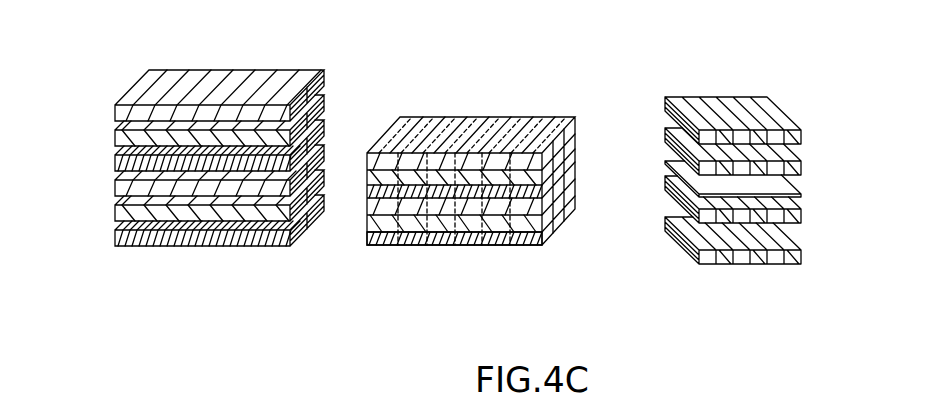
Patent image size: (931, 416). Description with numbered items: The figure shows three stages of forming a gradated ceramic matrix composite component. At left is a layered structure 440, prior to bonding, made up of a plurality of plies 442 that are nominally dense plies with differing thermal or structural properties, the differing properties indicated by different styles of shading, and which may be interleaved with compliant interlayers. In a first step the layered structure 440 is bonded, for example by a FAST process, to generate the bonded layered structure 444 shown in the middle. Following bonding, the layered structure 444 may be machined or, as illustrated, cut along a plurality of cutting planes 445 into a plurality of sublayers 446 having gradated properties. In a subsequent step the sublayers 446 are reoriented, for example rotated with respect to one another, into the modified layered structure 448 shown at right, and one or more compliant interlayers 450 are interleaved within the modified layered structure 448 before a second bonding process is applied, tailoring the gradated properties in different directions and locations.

The layered structure 440 is at (86, 110).
The plies 442 is at (96, 174).
The layered structure 444 is at (375, 98).
The cutting planes 445 is at (477, 135).
The sublayers 446 is at (441, 238).
The modified layered structure 448 is at (788, 84).
The compliant interlayers 450 is at (793, 189).